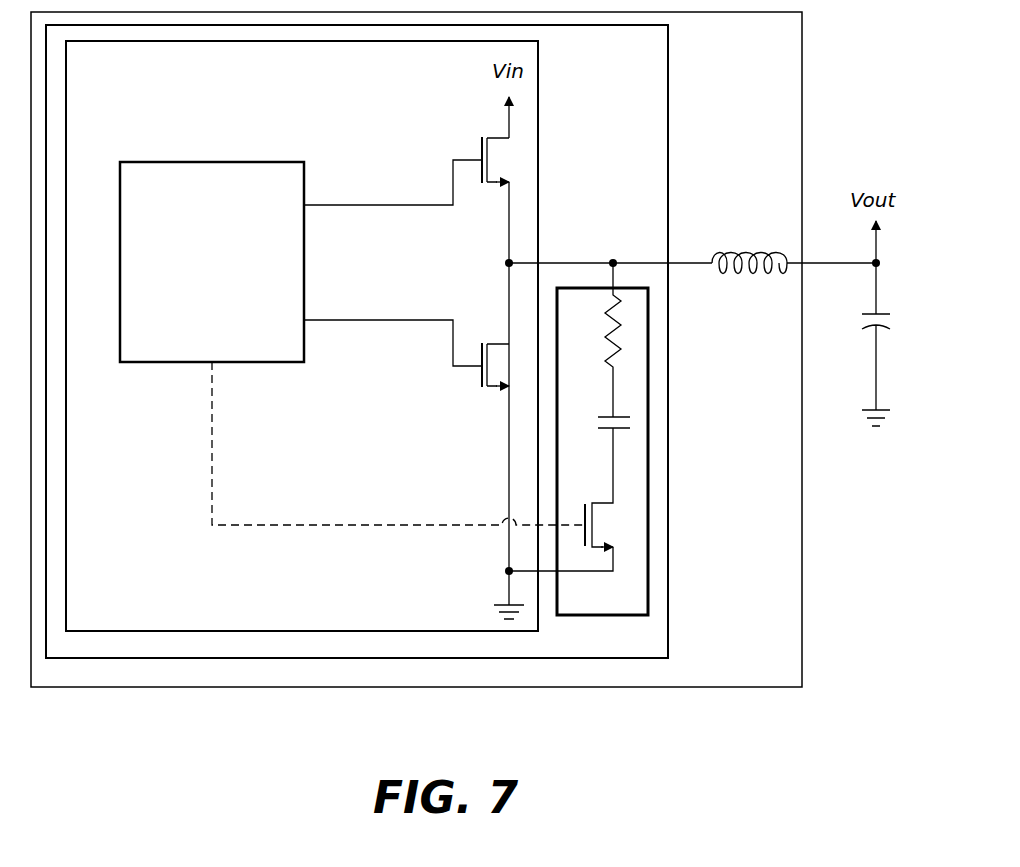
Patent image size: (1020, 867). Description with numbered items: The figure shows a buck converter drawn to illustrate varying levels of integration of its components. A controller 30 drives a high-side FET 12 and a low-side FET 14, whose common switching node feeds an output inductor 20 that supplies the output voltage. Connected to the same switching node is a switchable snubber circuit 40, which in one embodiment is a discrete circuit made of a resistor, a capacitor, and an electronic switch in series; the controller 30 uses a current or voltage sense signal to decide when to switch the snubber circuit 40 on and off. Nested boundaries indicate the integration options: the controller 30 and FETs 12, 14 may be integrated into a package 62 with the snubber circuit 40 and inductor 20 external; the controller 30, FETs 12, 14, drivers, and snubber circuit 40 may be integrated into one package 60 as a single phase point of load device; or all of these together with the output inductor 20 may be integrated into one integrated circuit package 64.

The FET 12 is at (482, 148).
The FET 14 is at (482, 375).
The inductor 20 is at (717, 250).
The controller 30 is at (200, 288).
The switchable snubber circuit 40 is at (617, 616).
The package 60 is at (668, 50).
The package 62 is at (538, 70).
The integrated circuit package 64 is at (802, 42).